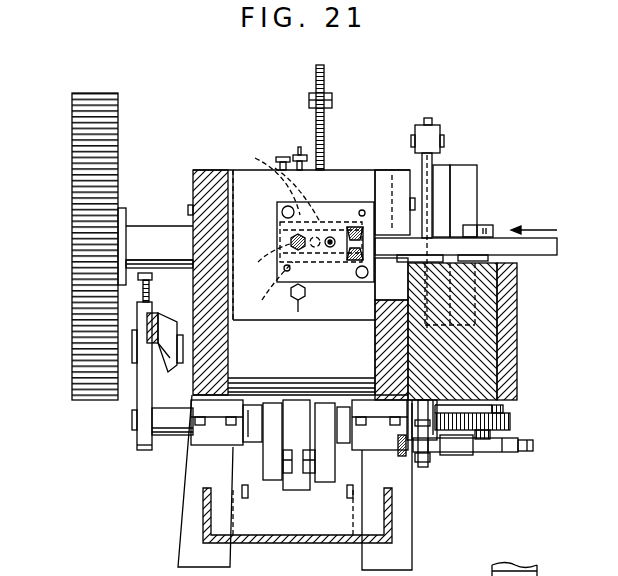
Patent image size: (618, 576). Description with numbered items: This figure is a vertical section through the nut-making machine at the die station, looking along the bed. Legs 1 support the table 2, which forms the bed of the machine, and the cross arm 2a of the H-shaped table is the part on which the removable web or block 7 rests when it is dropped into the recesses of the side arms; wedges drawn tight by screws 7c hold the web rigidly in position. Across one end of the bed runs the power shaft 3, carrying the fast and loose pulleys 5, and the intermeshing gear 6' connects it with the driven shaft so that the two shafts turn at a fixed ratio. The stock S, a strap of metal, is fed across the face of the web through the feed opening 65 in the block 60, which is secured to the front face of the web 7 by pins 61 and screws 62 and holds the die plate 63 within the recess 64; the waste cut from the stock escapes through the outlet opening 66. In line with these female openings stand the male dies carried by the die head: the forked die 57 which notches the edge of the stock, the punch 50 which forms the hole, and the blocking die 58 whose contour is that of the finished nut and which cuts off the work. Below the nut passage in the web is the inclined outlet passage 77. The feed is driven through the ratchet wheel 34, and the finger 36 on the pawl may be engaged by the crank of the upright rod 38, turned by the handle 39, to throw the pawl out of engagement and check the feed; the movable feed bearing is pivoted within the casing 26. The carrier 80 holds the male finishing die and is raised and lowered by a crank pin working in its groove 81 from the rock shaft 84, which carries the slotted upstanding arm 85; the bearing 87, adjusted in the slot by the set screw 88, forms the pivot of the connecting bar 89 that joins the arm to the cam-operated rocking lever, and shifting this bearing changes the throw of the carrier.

The legs 1 is at (182, 556).
The table 2 is at (213, 380).
The cross arm 2a is at (268, 382).
The power shaft 3 is at (147, 233).
The fast and loose pulleys 5 is at (450, 178).
The gear 6' is at (76, 246).
The web or block 7 is at (323, 187).
The screws 7c is at (187, 283).
The casing 26 is at (512, 332).
The ratchet wheel 34 is at (512, 455).
The finger 36 is at (400, 457).
The upright rod 38 is at (425, 170).
The handle 39 is at (432, 124).
The punch 50 is at (328, 249).
The forked die 57 is at (358, 250).
The blocking die 58 is at (290, 246).
The block 60 is at (284, 208).
The pins 61 is at (368, 200).
The screws 62 is at (280, 215).
The die plate 63 is at (280, 179).
The recess 64 is at (300, 156).
The feed opening 65 is at (391, 279).
The outlet opening 66 is at (271, 289).
The outlet passage 77 is at (298, 312).
The carrier 80 is at (295, 403).
The groove 81 is at (292, 460).
The rock shaft 84 is at (172, 425).
The upstanding arm 85 is at (144, 413).
The bearing 87 is at (132, 352).
The set screw 88 is at (143, 287).
The connecting bar 89 is at (147, 322).
The stock S is at (544, 256).